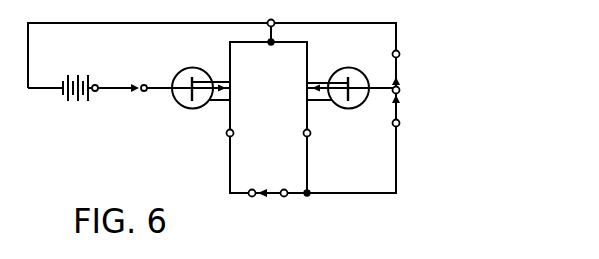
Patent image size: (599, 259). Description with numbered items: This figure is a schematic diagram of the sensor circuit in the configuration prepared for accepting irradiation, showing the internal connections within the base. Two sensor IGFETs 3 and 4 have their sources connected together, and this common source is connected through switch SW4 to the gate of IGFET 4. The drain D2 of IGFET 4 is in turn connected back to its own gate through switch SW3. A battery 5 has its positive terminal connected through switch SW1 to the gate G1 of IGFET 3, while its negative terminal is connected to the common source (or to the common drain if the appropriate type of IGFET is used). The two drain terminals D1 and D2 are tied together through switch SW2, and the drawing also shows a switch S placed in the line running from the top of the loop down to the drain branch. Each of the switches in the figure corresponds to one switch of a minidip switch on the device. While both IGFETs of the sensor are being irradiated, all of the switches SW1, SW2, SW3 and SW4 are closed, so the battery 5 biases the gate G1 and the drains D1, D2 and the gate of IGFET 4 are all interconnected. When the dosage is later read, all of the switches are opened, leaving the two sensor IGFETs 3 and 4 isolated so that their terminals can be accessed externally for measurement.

The IGFET 3 is at (191, 67).
The IGFET 4 is at (340, 68).
The battery 5 is at (78, 75).
The switch S is at (279, 14).
The switch SW1 is at (112, 106).
The switch SW2 is at (279, 209).
The switch SW3 is at (424, 112).
The switch SW4 is at (424, 72).
The gate G1 is at (161, 105).
The drain terminal D1 is at (215, 144).
The drain terminal D2 is at (325, 144).